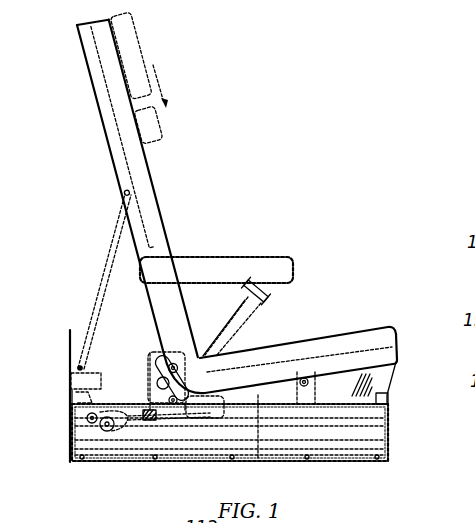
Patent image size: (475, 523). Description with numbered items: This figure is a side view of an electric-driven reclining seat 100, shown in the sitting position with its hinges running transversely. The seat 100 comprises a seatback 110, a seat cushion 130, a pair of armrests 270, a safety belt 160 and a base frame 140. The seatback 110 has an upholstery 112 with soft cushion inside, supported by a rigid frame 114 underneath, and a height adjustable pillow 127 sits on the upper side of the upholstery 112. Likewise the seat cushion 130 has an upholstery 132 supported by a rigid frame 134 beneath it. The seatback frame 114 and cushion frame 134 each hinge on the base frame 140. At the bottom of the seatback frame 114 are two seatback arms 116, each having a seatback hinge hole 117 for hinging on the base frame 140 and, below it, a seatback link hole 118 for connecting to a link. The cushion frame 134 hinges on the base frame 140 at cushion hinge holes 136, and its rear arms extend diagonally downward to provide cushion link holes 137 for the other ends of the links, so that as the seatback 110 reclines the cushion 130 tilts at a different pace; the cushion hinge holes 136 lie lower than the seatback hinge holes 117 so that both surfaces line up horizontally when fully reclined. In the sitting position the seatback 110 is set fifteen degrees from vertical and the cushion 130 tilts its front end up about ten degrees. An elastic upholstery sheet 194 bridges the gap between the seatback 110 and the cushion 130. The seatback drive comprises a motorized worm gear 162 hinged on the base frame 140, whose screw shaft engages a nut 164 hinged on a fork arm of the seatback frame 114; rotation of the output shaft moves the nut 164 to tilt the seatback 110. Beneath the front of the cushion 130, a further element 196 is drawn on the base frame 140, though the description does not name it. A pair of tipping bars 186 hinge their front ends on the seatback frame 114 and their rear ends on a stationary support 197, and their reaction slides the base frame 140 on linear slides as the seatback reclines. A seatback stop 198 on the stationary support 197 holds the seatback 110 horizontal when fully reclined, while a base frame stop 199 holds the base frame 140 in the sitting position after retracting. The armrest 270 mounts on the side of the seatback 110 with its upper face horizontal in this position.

The electric-driven reclining seat 100 is at (238, 251).
The seatback 110 is at (191, 196).
The upholstery 112 is at (165, 230).
The height adjustable pillow 127 is at (140, 56).
The rigid frame 114 is at (148, 325).
The seatback arm 116 is at (173, 359).
The seatback hinge hole 117 is at (173, 362).
The seatback link hole 118 is at (261, 433).
The seat cushion 130 is at (332, 336).
The upholstery 132 is at (362, 328).
The rigid frame 134 is at (258, 402).
The cushion hinge hole 136 is at (388, 355).
The cushion link hole 137 is at (200, 418).
The base frame 140 is at (366, 388).
The safety belt 160 is at (298, 282).
The motorized worm gear 162 is at (110, 430).
The nut 164 is at (148, 410).
The tipping bar 186 is at (71, 328).
The elastic upholstery sheet 194 is at (205, 352).
The support bracket 196 is at (319, 392).
The stationary support 197 is at (70, 383).
The seatback stop 198 is at (80, 366).
The base frame stop 199 is at (78, 412).
The armrest 270 is at (252, 254).